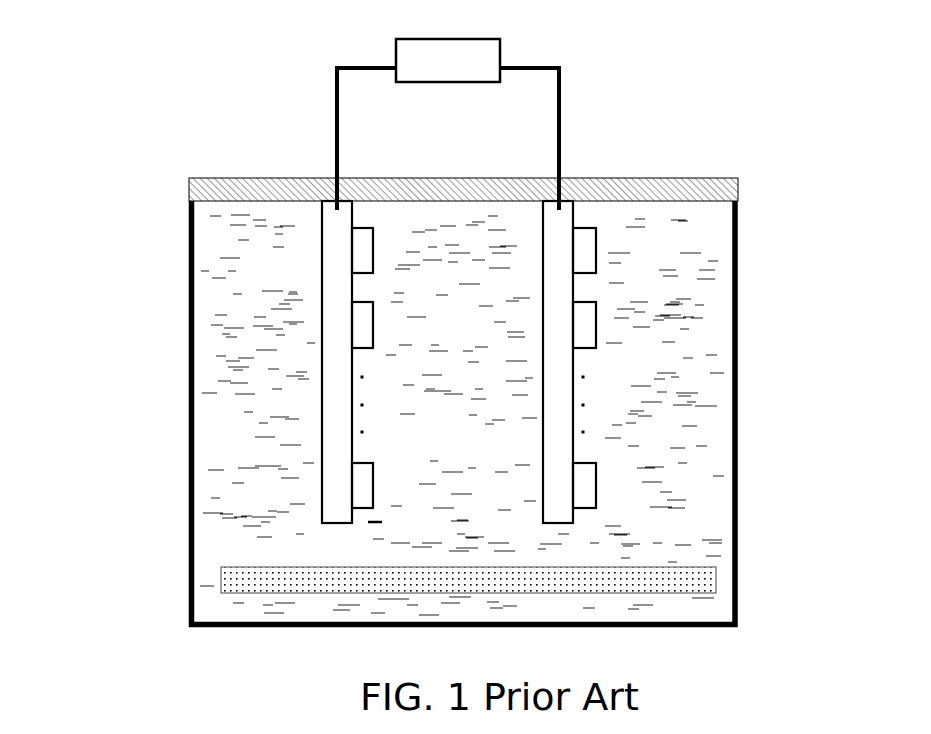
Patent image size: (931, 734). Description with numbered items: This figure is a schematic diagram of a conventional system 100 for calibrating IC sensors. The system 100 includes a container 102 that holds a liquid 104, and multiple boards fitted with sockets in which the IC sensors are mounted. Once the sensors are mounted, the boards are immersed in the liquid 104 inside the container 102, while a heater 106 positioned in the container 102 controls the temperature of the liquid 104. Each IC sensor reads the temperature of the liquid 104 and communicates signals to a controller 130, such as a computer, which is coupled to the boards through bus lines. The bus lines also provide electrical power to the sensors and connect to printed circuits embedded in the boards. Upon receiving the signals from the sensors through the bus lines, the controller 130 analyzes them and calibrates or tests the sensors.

The conventional system 100 is at (132, 61).
The container 102 is at (189, 245).
The liquid 104 is at (718, 295).
The heater 106 is at (703, 572).
The controller 130 is at (448, 60).